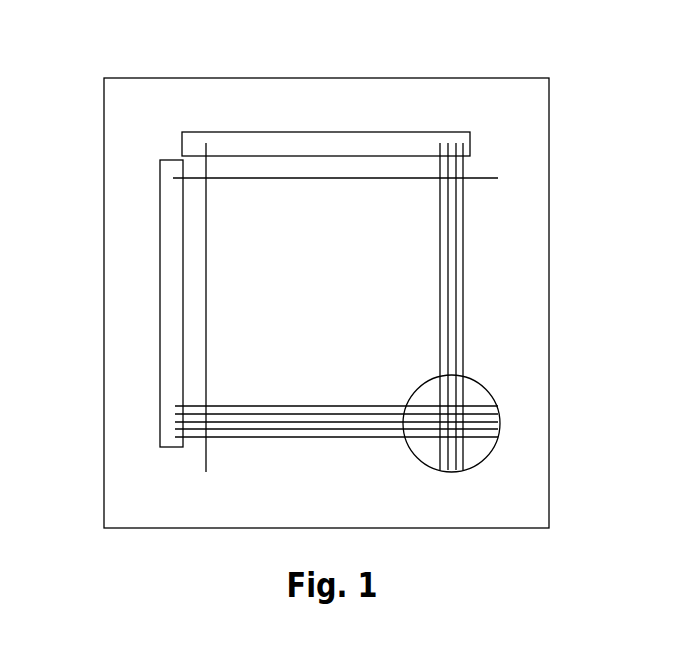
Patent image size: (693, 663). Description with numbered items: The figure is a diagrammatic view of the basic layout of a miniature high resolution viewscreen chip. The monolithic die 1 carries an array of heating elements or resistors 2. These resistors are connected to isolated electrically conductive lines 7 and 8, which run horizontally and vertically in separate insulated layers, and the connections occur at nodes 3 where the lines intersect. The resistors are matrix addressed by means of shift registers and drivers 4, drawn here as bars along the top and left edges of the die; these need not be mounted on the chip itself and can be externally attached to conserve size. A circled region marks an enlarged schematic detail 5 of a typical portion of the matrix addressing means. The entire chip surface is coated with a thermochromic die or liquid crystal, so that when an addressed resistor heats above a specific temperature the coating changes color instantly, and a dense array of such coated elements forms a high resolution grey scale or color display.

The monolithic die 1 is at (104, 277).
The heating elements or resistors 2 is at (520, 325).
The nodes 3 is at (388, 213).
The shift registers and drivers 4 is at (212, 133).
The enlarged schematic detail 5 is at (510, 381).
The electrically conductive lines 7 is at (336, 376).
The electrically conductive lines 8 is at (250, 307).